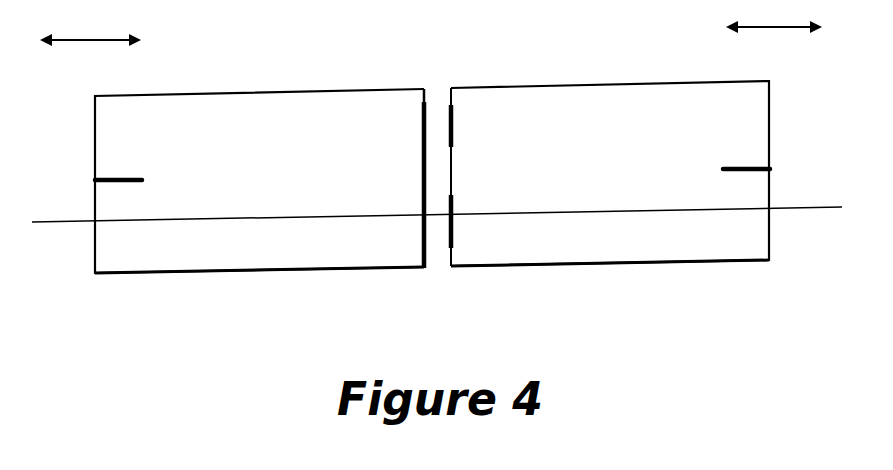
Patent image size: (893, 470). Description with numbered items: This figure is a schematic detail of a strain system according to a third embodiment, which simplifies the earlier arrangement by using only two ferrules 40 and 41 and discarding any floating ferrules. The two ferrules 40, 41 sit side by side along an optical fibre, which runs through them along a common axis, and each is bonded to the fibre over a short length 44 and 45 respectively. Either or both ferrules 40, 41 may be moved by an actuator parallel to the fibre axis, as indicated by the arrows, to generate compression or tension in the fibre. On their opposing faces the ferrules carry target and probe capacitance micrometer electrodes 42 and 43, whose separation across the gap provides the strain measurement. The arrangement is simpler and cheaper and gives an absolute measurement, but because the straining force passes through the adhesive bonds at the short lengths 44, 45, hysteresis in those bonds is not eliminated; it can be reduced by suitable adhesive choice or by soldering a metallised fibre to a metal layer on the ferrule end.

The ferrule 40 is at (273, 93).
The ferrule 41 is at (605, 84).
The capacitance micrometer electrode 42 is at (420, 120).
The capacitance micrometer electrode 43 is at (452, 120).
The bonded length 44 is at (112, 184).
The bonded length 45 is at (742, 172).